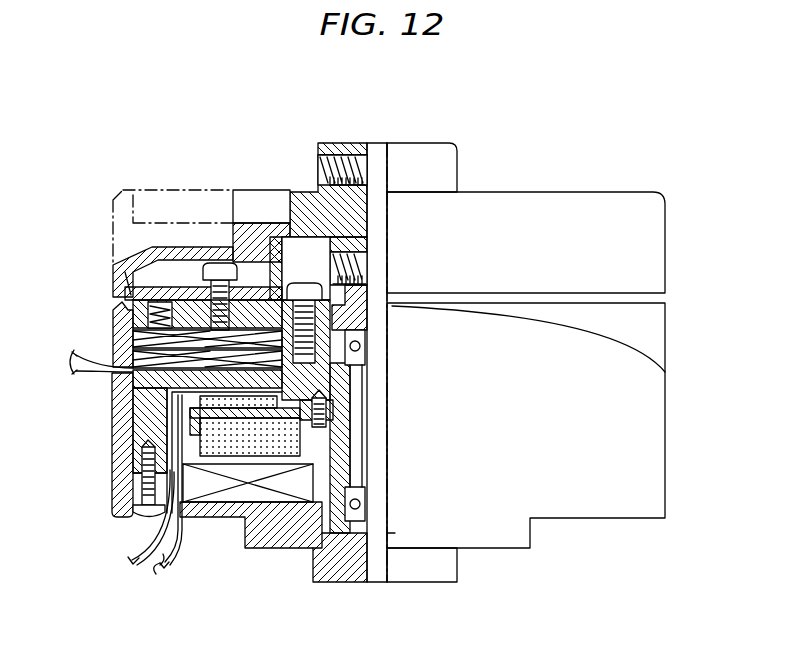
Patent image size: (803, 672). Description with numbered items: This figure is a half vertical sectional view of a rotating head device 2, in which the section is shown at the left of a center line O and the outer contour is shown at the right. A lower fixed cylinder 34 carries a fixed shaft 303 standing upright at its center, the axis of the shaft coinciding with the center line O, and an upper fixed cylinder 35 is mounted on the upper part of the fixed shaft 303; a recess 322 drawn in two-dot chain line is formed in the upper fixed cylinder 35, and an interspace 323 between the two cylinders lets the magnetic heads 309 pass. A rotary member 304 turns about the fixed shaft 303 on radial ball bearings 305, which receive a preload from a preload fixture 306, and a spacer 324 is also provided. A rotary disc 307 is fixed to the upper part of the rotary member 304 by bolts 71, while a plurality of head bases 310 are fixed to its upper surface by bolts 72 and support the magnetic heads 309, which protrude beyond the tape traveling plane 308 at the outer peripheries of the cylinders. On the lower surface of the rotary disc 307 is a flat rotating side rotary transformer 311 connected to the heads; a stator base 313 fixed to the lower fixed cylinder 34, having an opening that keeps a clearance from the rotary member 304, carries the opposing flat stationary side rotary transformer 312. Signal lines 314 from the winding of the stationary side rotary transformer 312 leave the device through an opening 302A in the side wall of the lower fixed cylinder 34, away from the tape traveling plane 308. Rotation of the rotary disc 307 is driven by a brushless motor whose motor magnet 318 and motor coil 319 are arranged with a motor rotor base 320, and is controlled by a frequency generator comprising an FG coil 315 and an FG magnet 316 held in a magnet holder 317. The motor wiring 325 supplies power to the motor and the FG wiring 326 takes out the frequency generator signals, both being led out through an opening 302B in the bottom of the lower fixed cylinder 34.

The rotating head device 2 is at (344, 138).
The lower fixed cylinder 34 is at (346, 568).
The upper fixed cylinder 35 is at (345, 206).
The bolts 71 is at (300, 286).
The bolts 72 is at (220, 262).
The opening 302A is at (110, 360).
The opening 302B is at (180, 532).
The fixed shaft 303 is at (379, 566).
The rotary member 304 is at (352, 424).
The radial ball bearings 305 is at (362, 500).
The preload fixture 306 is at (362, 296).
The rotary disc 307 is at (262, 289).
The tape traveling plane 308 is at (549, 312).
The magnetic heads 309 is at (118, 299).
The head base 310 is at (120, 264).
The rotating side rotary transformer 311 is at (118, 319).
The stationary side rotary transformer 312 is at (120, 381).
The stator base 313 is at (120, 401).
The signal lines 314 is at (68, 356).
The FG coil 315 is at (126, 424).
The FG magnet 316 is at (136, 445).
The magnet holder 317 is at (122, 491).
The motor magnet 318 is at (236, 477).
The motor coil 319 is at (266, 520).
The motor rotor base 320 is at (340, 396).
The recess 322 is at (126, 198).
The interspace 323 is at (600, 300).
The spacer 324 is at (355, 239).
The motor wiring 325 is at (158, 572).
The FG wiring 326 is at (128, 562).
The center line O is at (396, 532).